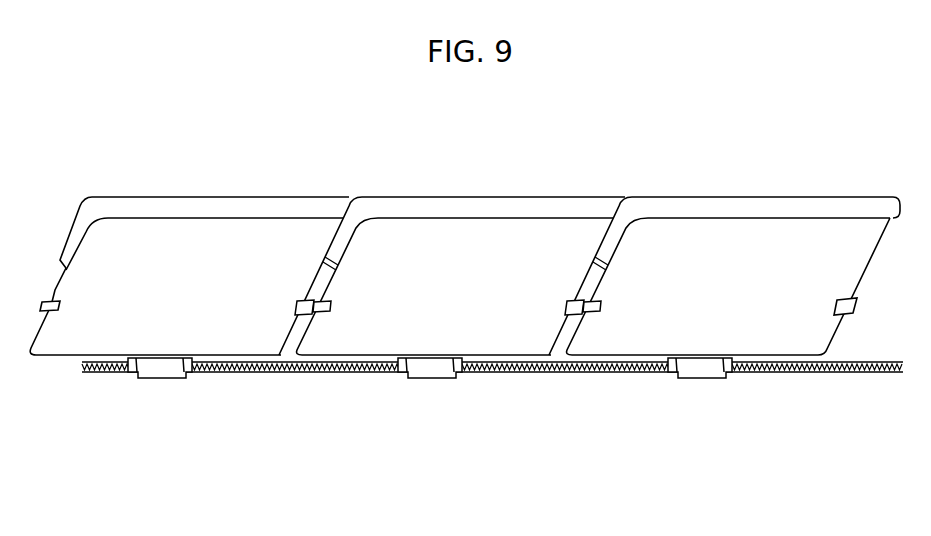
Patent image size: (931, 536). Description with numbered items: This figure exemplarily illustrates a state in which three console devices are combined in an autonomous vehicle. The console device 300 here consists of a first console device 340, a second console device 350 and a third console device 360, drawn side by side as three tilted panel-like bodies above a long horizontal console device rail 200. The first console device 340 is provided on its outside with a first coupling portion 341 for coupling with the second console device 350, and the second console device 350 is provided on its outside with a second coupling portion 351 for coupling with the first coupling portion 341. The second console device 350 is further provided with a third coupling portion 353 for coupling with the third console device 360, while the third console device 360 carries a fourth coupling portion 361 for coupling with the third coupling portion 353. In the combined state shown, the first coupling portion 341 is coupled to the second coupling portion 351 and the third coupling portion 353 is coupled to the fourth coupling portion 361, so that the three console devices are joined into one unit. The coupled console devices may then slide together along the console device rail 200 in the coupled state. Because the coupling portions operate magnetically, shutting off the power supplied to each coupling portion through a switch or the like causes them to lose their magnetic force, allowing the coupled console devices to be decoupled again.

The console device rail 200 is at (283, 373).
The console device 300 is at (465, 306).
The first console device 340 is at (750, 255).
The first coupling portion 341 is at (600, 313).
The second console device 350 is at (447, 255).
The second coupling portion 351 is at (572, 298).
The third coupling portion 353 is at (330, 313).
The third console device 360 is at (180, 247).
The fourth coupling portion 361 is at (302, 298).